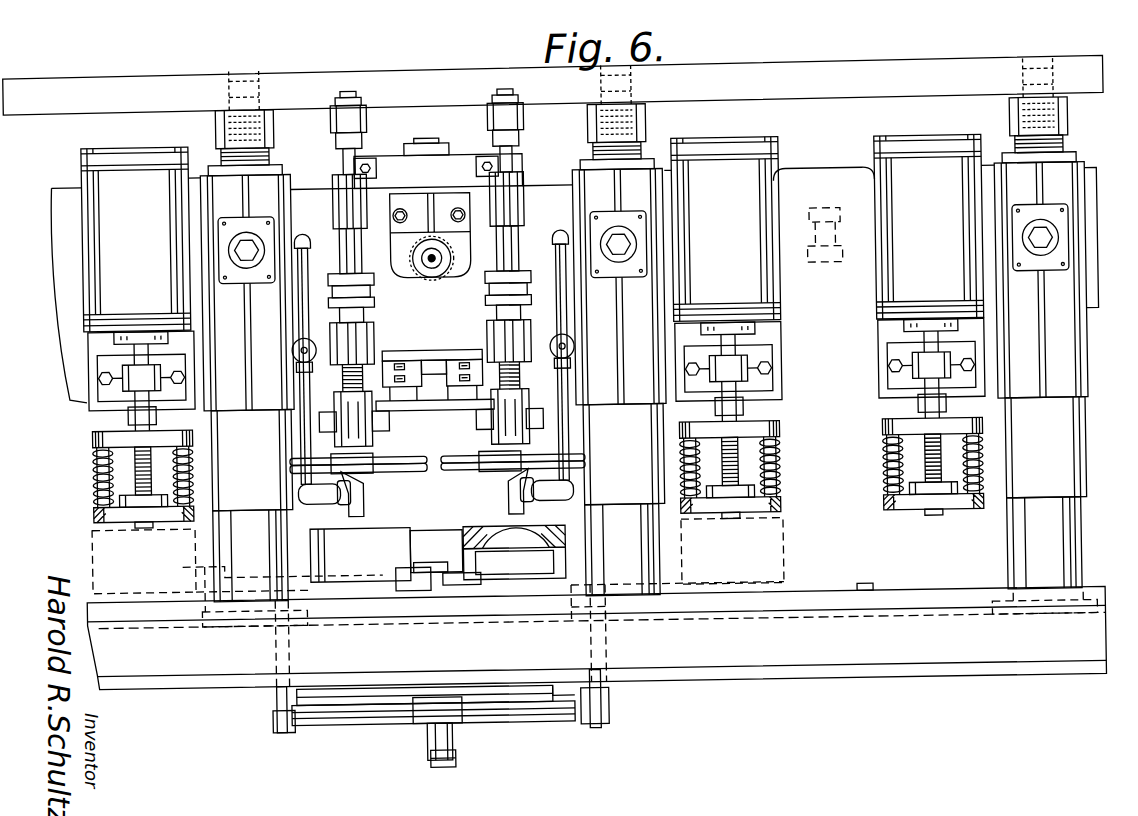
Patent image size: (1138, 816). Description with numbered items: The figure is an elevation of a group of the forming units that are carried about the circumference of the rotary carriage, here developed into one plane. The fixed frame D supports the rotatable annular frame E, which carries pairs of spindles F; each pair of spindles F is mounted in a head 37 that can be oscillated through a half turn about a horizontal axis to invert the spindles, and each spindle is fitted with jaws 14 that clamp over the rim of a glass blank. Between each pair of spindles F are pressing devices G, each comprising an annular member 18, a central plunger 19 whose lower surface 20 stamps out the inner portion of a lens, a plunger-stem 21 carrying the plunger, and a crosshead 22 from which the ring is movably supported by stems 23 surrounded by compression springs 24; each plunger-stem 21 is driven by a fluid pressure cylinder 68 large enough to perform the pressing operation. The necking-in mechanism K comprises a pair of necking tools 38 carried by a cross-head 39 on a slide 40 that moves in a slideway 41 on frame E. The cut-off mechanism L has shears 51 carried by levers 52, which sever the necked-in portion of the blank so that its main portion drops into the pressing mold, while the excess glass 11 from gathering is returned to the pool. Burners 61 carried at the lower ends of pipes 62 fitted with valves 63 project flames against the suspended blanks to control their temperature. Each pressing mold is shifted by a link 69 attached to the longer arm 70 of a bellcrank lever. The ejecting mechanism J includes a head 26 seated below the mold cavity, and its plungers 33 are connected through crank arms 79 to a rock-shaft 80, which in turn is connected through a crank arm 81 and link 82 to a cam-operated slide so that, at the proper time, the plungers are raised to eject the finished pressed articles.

The excess glass 11 is at (413, 528).
The jaws 14 is at (343, 431).
The annular member 18 is at (96, 507).
The central plunger 19 is at (146, 490).
The lower surface 20 is at (777, 524).
The plunger-stem 21 is at (132, 399).
The crosshead 22 is at (92, 431).
The stems 23 is at (97, 477).
The compression springs 24 is at (97, 494).
The head 26 is at (506, 548).
The plungers 33 is at (273, 686).
The head 37 is at (484, 241).
The necking tools 38 is at (449, 426).
The cross-head 39 is at (470, 408).
The slide 40 is at (437, 409).
The slideway 41 is at (414, 350).
The shears 51 is at (289, 458).
The levers 52 is at (289, 466).
The burners 61 is at (347, 500).
The pipes 62 is at (306, 410).
The valves 63 is at (311, 361).
The fluid pressure cylinder 68 is at (96, 258).
The link 69 is at (468, 582).
The longer arm 70 is at (433, 565).
The crank arms 79 is at (279, 728).
The rock-shaft 80 is at (515, 721).
The crank arm 81 is at (425, 738).
The link 82 is at (437, 766).
The central fixed frame portion D is at (787, 680).
The annular frame structure E is at (786, 71).
The spindles F is at (424, 113).
The pressing devices G is at (88, 456).
The ejecting mechanism J is at (395, 719).
The necking-in mechanism K is at (379, 442).
The cut-off mechanism L is at (377, 488).